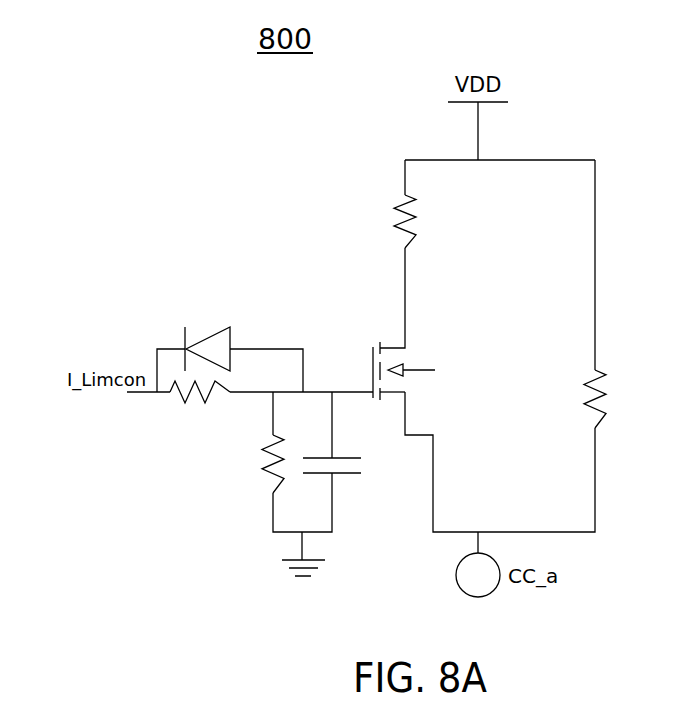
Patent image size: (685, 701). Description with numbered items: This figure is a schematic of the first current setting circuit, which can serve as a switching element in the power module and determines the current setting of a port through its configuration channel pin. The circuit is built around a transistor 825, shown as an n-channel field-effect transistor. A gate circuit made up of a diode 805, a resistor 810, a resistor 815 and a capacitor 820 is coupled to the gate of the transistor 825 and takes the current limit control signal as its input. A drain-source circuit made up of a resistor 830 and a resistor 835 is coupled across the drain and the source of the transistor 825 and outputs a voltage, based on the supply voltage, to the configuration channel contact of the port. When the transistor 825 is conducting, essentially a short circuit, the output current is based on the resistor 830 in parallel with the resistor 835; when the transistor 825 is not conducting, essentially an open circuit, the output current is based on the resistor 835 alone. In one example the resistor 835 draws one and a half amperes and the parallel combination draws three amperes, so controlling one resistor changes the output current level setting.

The diode 805 is at (212, 330).
The resistor 810 is at (190, 404).
The resistor 815 is at (262, 489).
The capacitor 820 is at (346, 478).
The transistor 825 is at (393, 343).
The resistor 830 is at (400, 242).
The resistor 835 is at (598, 420).